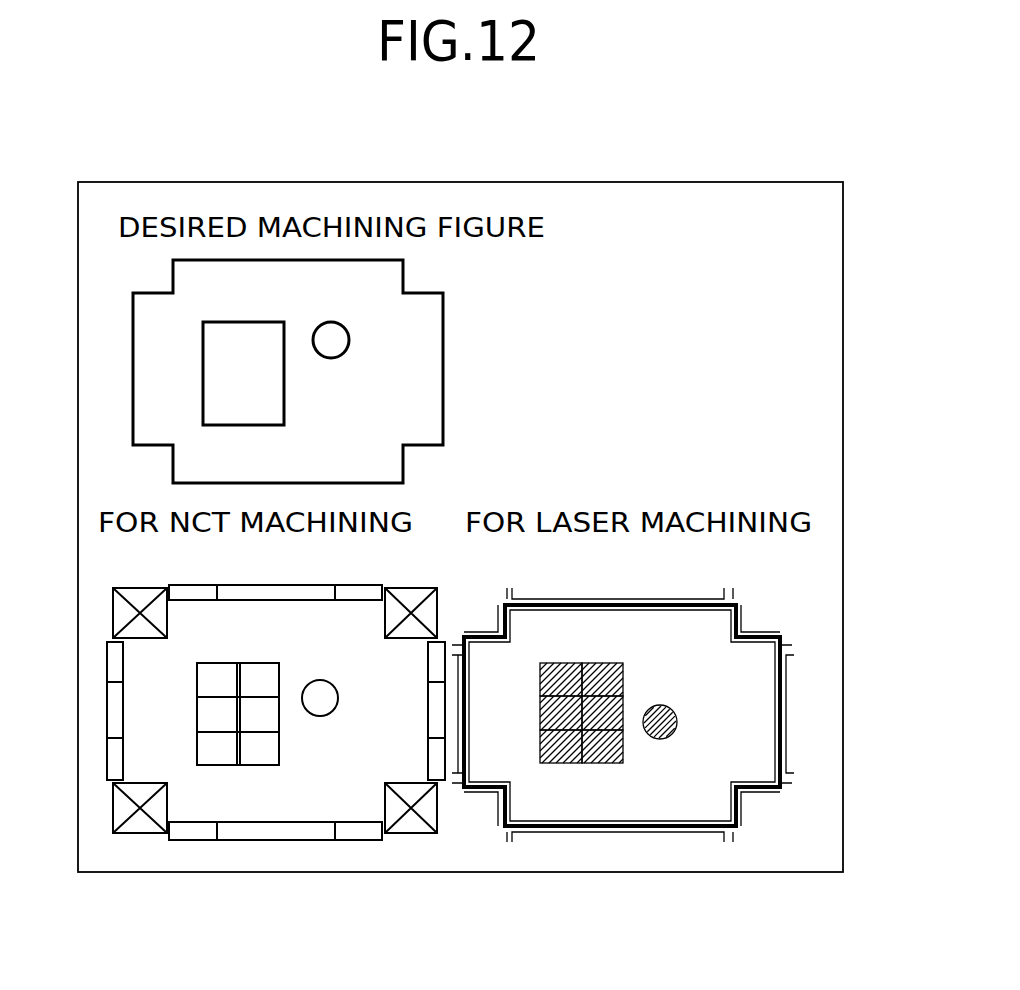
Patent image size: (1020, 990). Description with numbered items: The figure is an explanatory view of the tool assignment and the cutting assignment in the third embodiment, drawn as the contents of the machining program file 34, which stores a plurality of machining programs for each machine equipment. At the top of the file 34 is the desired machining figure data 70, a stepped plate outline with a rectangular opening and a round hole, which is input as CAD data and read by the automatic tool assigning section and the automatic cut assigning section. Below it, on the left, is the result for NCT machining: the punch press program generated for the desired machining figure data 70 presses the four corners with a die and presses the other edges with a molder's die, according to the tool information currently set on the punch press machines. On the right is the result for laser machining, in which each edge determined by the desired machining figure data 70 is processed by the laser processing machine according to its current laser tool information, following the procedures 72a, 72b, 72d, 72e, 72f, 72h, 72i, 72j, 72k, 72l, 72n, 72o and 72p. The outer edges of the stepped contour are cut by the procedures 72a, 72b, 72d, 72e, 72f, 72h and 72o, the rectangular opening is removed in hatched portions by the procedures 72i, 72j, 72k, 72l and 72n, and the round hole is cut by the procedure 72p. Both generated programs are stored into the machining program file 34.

The machining program file 34 is at (680, 182).
The desired machining figure data 70 is at (447, 312).
The laser machining procedure 72a is at (627, 835).
The laser machining procedure 72b is at (740, 810).
The laser machining procedure 72d is at (743, 612).
The laser machining procedure 72e is at (597, 600).
The laser machining procedure 72f is at (478, 627).
The laser machining procedure 72h is at (478, 793).
The laser machining procedure 72i is at (610, 673).
The laser machining procedure 72j is at (617, 727).
The laser machining procedure 72k is at (613, 752).
The laser machining procedure 72l is at (555, 660).
The laser machining procedure 72n is at (550, 713).
The laser machining procedure 72o is at (783, 743).
The laser machining procedure 72p is at (670, 720).